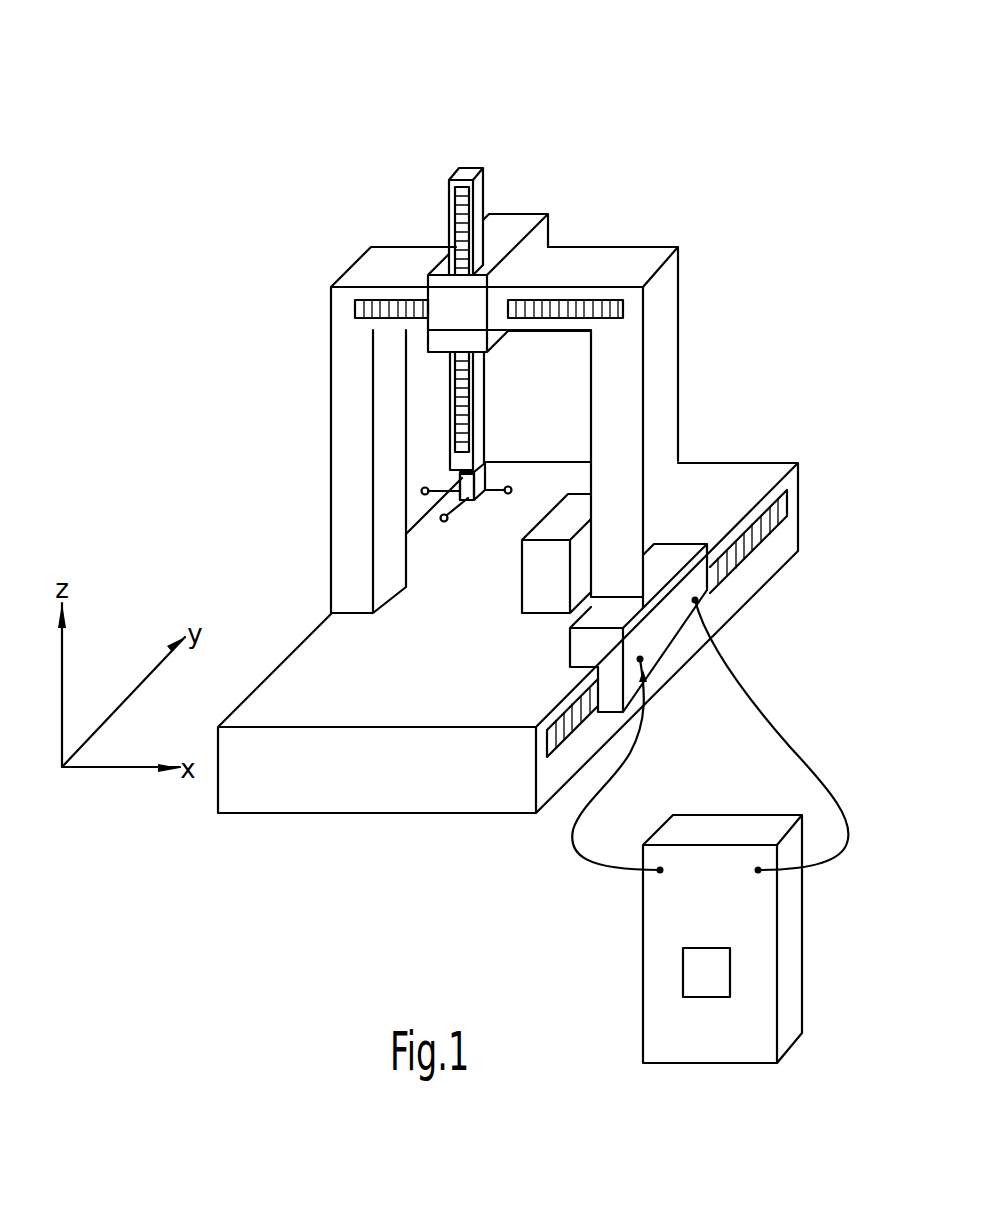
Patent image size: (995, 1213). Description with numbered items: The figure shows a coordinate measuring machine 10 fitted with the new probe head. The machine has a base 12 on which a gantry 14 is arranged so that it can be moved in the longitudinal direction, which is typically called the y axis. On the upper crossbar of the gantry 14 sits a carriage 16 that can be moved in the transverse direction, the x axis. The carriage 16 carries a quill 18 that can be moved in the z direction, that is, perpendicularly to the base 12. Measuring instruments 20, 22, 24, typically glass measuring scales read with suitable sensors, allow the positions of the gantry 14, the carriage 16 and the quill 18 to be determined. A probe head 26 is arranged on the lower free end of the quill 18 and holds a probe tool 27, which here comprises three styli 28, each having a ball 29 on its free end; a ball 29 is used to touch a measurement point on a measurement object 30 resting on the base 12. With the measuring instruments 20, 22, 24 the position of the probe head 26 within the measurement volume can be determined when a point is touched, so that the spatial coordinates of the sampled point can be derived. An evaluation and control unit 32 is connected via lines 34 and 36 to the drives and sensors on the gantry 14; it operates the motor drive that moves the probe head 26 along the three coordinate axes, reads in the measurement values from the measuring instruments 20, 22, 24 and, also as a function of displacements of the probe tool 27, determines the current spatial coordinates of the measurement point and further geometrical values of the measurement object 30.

The coordinate measuring machine 10 is at (240, 525).
The base 12 is at (325, 680).
The gantry 14 is at (658, 367).
The carriage 16 is at (512, 218).
The quill 18 is at (465, 170).
The measuring instrument 20 is at (788, 497).
The measuring instrument 22 is at (580, 297).
The measuring instrument 24 is at (460, 212).
The probe head 26 is at (487, 467).
The probe tool 27 is at (440, 484).
The stylus 28 is at (460, 473).
The ball 29 is at (425, 491).
The measurement object 30 is at (547, 585).
The evaluation and control unit 32 is at (747, 1022).
The line 34 is at (637, 748).
The line 36 is at (792, 748).